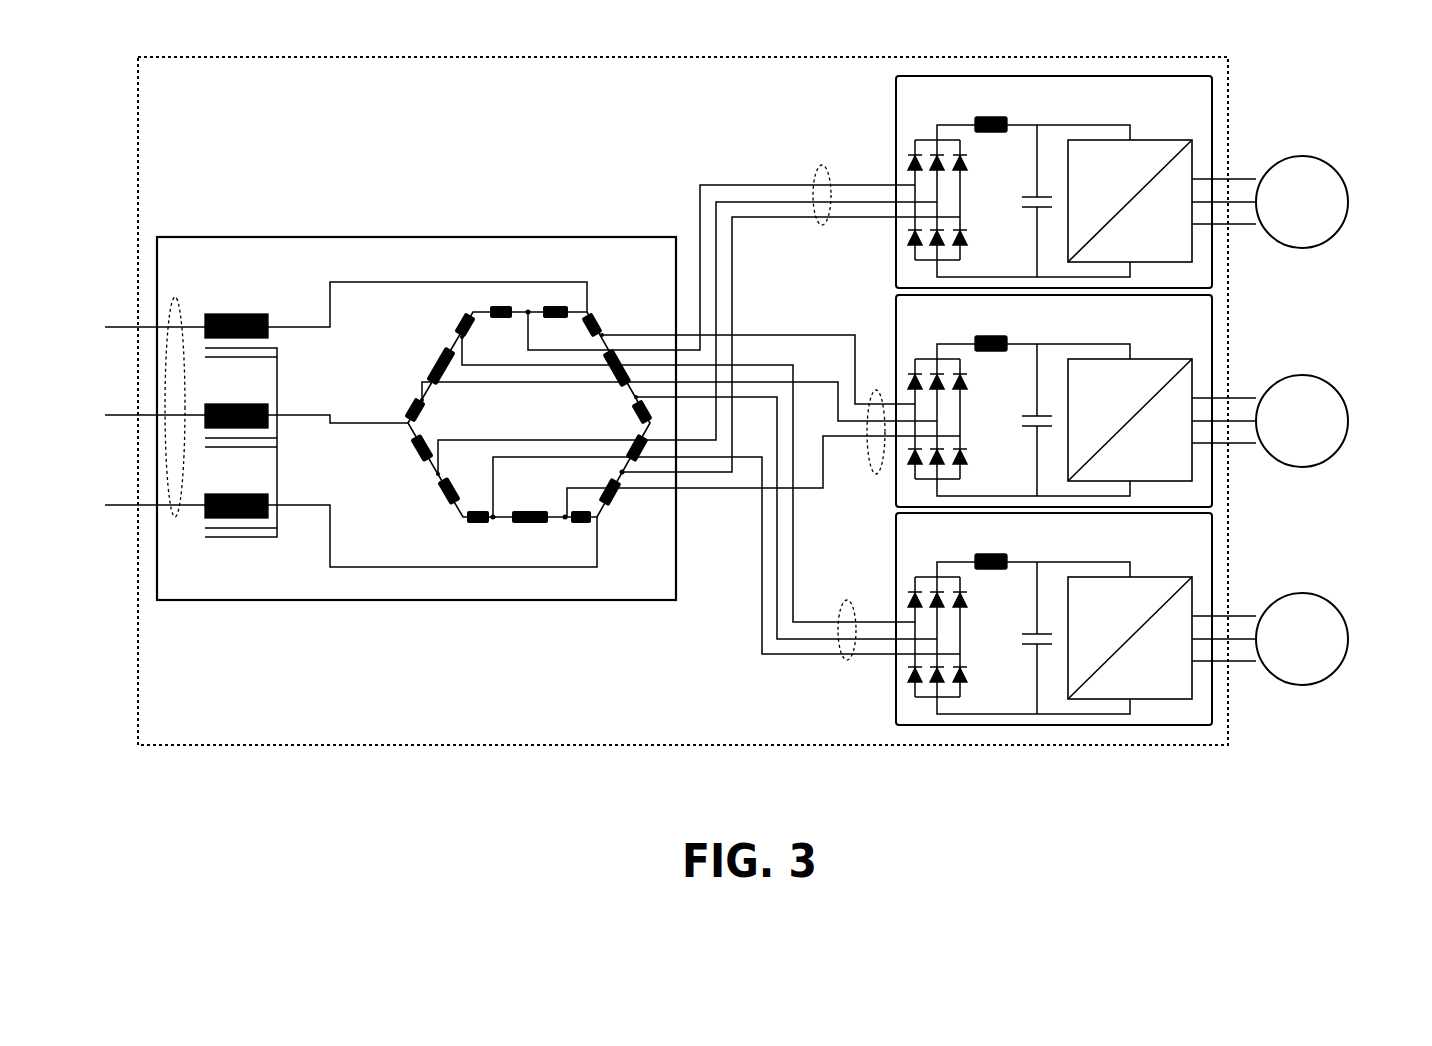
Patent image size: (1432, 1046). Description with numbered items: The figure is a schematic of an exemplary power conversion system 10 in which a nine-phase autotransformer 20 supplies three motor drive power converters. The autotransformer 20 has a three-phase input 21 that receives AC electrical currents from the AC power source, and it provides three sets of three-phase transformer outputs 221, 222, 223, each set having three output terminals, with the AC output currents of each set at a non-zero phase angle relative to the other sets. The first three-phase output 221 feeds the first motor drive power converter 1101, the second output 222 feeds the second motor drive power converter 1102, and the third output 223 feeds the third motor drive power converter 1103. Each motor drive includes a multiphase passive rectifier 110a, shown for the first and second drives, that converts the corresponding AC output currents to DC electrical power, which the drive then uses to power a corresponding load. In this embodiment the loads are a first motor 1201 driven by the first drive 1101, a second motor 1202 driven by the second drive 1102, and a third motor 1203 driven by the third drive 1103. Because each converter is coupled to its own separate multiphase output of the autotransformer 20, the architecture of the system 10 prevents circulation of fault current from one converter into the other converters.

The power conversion system 10 is at (692, 57).
The nine-phase autotransformer 20 is at (416, 237).
The three-phase input 21 is at (180, 298).
The first three-phase output 221 is at (816, 170).
The second three-phase output 222 is at (874, 470).
The third three-phase output 223 is at (838, 658).
The first motor drive power converter 1101 is at (896, 86).
The second motor drive power converter 1102 is at (896, 298).
The third motor drive power converter 1103 is at (896, 530).
The passive rectifier 110a is at (906, 136).
The first load 1201 is at (1348, 205).
The second load 1202 is at (1348, 424).
The third load 1203 is at (1348, 642).